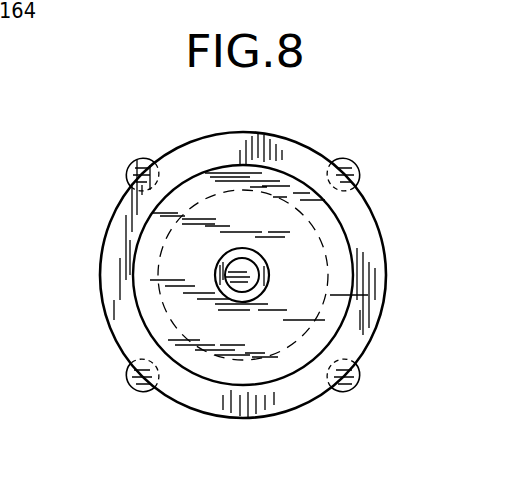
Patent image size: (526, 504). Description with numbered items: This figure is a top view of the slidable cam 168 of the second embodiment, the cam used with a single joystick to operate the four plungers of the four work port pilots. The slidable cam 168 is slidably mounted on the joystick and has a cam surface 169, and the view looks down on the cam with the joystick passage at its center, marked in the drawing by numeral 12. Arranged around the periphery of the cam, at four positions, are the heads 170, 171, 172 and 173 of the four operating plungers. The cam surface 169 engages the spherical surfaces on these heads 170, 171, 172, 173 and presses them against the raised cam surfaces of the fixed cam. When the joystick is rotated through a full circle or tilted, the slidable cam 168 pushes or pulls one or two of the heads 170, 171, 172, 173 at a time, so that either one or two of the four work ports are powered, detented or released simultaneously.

The hub 12 is at (266, 262).
The slidable cam 168 is at (120, 264).
The cam surface 169 is at (398, 279).
The head of operating plunger 170 is at (135, 158).
The head of operating plunger 171 is at (348, 170).
The head of operating plunger 172 is at (358, 390).
The head of operating plunger 173 is at (125, 392).